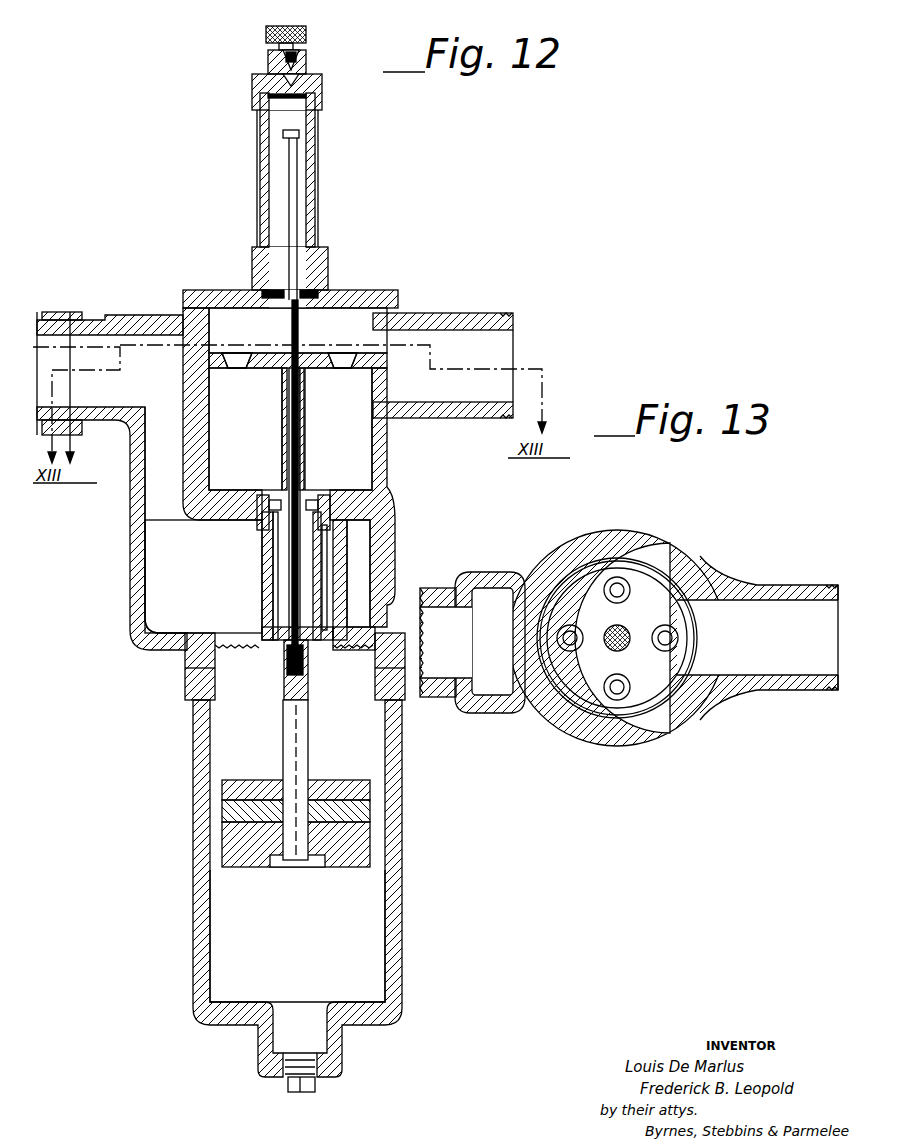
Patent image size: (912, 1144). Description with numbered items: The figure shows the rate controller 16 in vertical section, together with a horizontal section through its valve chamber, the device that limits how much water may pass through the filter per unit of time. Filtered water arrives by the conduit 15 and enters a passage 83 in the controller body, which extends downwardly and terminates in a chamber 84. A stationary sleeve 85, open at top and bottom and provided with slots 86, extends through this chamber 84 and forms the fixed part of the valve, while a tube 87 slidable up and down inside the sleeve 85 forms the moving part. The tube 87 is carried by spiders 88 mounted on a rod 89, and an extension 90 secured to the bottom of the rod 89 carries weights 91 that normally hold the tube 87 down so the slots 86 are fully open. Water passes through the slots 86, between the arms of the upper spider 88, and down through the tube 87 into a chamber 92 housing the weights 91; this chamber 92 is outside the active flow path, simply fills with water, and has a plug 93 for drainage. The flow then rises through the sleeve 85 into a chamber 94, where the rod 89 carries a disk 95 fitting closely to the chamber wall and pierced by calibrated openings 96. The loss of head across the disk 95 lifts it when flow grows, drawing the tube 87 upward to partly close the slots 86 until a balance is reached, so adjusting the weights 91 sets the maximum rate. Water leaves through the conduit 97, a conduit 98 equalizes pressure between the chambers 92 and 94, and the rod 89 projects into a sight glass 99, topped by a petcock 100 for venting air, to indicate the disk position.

In FIG. 12, the petcock 100 is at (306, 33).
In FIG. 12, the sight glass 99 is at (263, 165).
In FIG. 12, the conduit 15 is at (37, 320).
In FIG. 12, the calibrated openings 96 is at (336, 352).
In FIG. 13, the calibrated openings 96 is at (604, 590).
In FIG. 12, the conduit 97 is at (494, 355).
In FIG. 12, the disk 95 is at (352, 368).
In FIG. 13, the disk 95 is at (675, 656).
In FIG. 12, the spiders 88 is at (272, 505).
In FIG. 12, the sleeve 85 is at (262, 500).
In FIG. 12, the rod 89 is at (301, 427).
In FIG. 13, the rod 89 is at (627, 633).
In FIG. 12, the chamber 94 is at (360, 462).
In FIG. 12, the passage 83 is at (143, 493).
In FIG. 13, the passage 83 is at (472, 642).
In FIG. 12, the conduit 98 is at (360, 527).
In FIG. 12, the slots 86 is at (262, 545).
In FIG. 12, the chamber 84 is at (203, 576).
In FIG. 12, the tube 87 is at (268, 590).
In FIG. 12, the extension 90 is at (308, 725).
In FIG. 12, the rate controller 16 is at (403, 720).
In FIG. 13, the rate controller 16 is at (643, 748).
In FIG. 12, the weights 91 is at (350, 855).
In FIG. 12, the chamber 92 is at (297, 936).
In FIG. 12, the plug 93 is at (316, 1086).